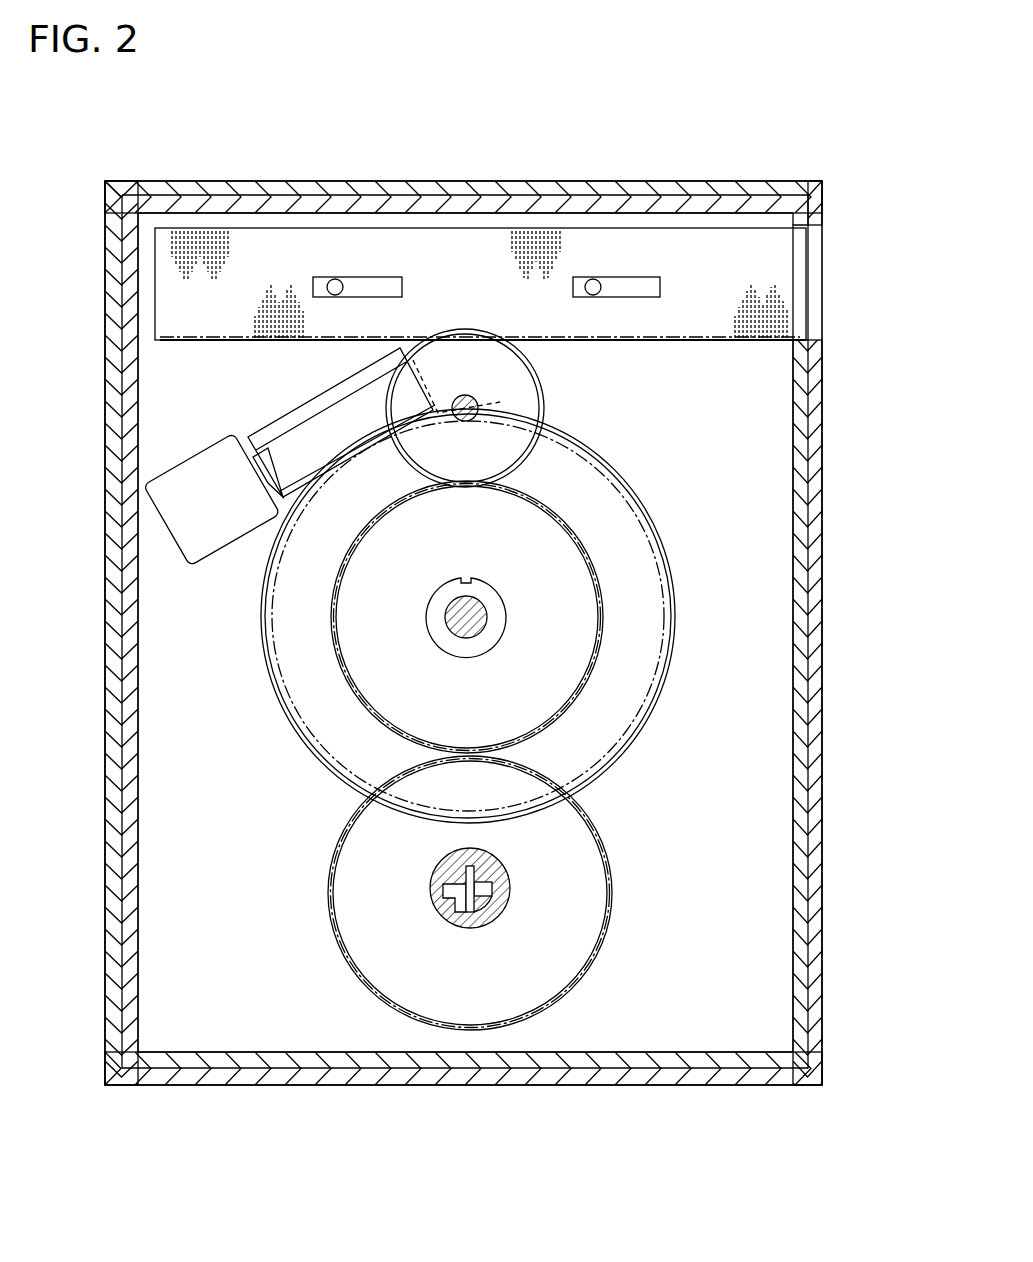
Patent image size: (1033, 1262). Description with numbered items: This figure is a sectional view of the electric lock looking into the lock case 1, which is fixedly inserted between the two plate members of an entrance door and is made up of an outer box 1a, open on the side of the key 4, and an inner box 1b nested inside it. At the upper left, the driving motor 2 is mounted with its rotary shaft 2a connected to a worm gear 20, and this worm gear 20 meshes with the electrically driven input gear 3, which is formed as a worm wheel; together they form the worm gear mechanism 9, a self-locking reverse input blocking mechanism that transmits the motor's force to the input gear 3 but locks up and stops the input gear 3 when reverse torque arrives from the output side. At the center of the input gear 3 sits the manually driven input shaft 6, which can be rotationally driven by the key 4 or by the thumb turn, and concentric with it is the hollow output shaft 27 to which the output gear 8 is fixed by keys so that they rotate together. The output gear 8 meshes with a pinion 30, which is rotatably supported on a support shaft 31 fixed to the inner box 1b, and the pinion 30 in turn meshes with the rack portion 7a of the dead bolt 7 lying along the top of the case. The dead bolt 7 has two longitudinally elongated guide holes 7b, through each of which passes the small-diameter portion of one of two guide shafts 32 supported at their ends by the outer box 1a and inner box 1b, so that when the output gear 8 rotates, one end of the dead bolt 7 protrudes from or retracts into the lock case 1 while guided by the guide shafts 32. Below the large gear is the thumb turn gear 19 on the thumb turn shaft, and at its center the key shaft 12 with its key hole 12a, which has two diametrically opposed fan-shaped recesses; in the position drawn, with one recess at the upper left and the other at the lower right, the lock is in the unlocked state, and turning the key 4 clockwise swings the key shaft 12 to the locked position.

The lock case 1 is at (463, 585).
The outer box 1a is at (160, 183).
The inner box 1b is at (218, 190).
The driving motor 2 is at (205, 545).
The rotary shaft 2a is at (255, 450).
The electrically driven input gear 3 is at (310, 690).
The key 4 is at (500, 882).
The manually driven input shaft 6 is at (480, 628).
The dead bolt 7 is at (440, 262).
The rack portion 7a is at (700, 352).
The guide holes 7b is at (386, 282).
The output gear 8 is at (535, 522).
The worm gear mechanism 9 is at (258, 651).
The key shaft 12 is at (440, 860).
The key hole 12a is at (440, 884).
The thumb turn gear 19 is at (562, 838).
The worm gear 20 is at (330, 425).
The output shaft 27 is at (487, 598).
The pinion 30 is at (512, 388).
The support shaft 31 is at (480, 408).
The guide shafts 32 is at (334, 280).